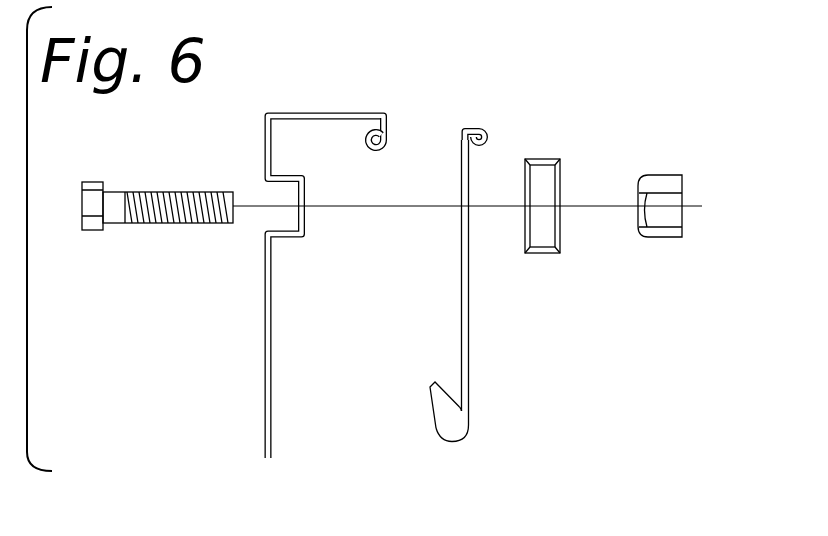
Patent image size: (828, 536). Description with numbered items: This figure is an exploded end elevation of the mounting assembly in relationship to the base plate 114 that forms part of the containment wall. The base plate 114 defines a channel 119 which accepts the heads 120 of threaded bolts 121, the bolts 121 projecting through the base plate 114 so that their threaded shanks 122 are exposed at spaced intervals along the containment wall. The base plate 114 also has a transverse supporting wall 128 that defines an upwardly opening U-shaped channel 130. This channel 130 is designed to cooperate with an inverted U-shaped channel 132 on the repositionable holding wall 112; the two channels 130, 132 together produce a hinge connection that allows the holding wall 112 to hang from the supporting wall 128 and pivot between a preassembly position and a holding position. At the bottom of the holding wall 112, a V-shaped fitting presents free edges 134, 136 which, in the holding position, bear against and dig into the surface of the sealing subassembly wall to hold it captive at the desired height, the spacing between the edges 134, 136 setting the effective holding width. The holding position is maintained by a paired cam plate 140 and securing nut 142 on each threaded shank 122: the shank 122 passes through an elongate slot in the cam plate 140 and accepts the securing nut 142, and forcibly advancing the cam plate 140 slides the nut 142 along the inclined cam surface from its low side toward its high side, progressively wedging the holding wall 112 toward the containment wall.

The holding wall 112 is at (468, 303).
The base plate 114 is at (272, 295).
The channel 119 is at (297, 195).
The heads 120 is at (95, 182).
The threaded bolts 121 is at (160, 223).
The threaded shanks 122 is at (208, 191).
The transverse supporting wall 128 is at (337, 112).
The U-shaped channel 130 is at (370, 128).
The inverted U-shaped channel 132 is at (485, 152).
The free edge 134 is at (432, 385).
The free edge 136 is at (438, 440).
The cam plate 140 is at (545, 175).
The securing nut 142 is at (662, 203).